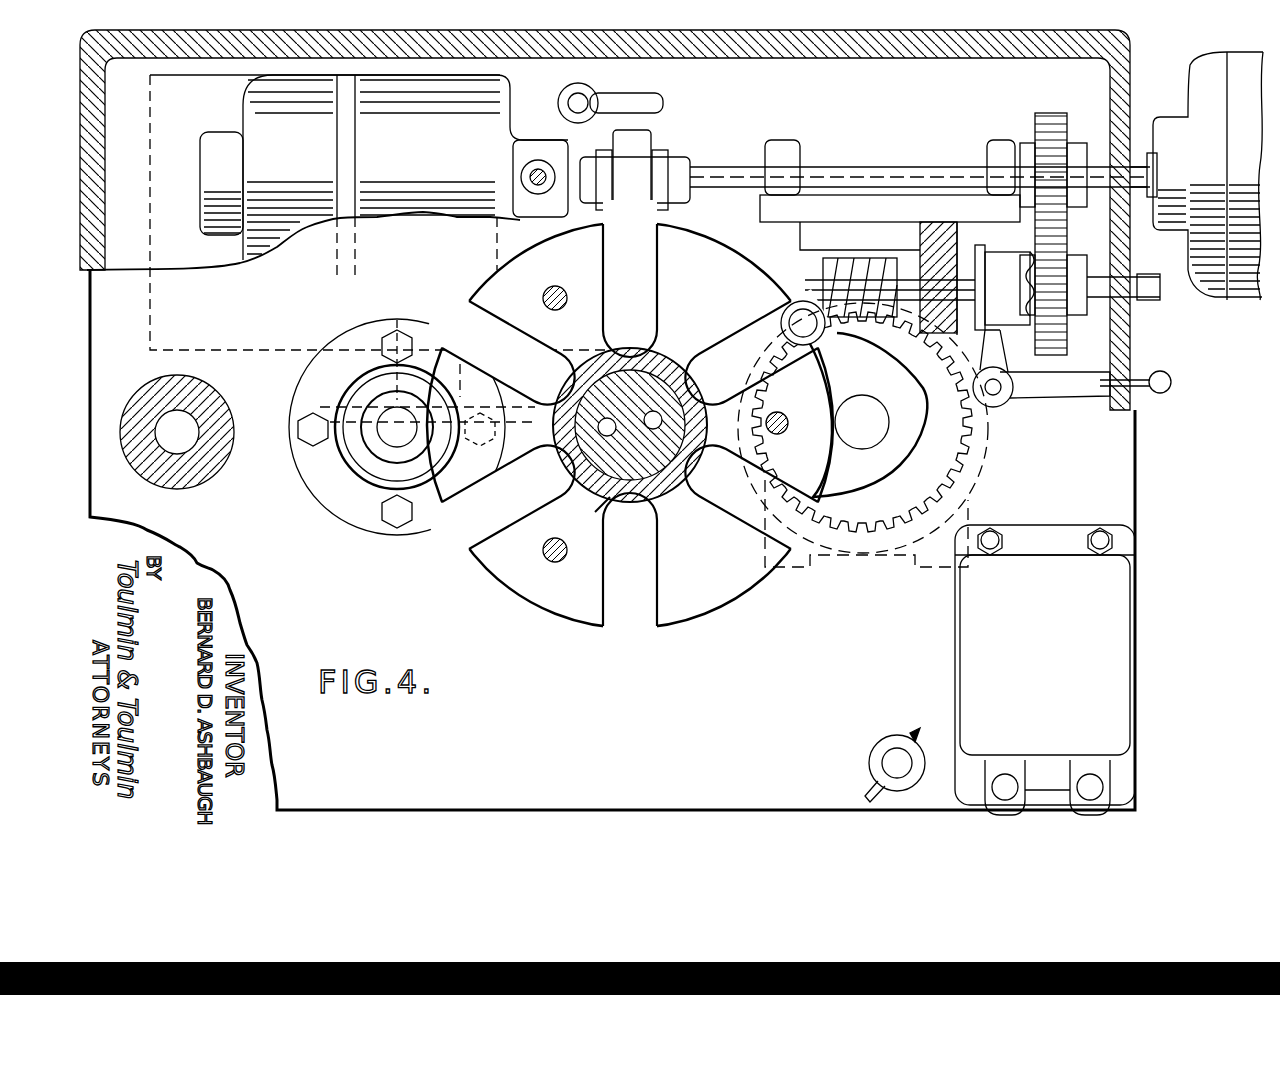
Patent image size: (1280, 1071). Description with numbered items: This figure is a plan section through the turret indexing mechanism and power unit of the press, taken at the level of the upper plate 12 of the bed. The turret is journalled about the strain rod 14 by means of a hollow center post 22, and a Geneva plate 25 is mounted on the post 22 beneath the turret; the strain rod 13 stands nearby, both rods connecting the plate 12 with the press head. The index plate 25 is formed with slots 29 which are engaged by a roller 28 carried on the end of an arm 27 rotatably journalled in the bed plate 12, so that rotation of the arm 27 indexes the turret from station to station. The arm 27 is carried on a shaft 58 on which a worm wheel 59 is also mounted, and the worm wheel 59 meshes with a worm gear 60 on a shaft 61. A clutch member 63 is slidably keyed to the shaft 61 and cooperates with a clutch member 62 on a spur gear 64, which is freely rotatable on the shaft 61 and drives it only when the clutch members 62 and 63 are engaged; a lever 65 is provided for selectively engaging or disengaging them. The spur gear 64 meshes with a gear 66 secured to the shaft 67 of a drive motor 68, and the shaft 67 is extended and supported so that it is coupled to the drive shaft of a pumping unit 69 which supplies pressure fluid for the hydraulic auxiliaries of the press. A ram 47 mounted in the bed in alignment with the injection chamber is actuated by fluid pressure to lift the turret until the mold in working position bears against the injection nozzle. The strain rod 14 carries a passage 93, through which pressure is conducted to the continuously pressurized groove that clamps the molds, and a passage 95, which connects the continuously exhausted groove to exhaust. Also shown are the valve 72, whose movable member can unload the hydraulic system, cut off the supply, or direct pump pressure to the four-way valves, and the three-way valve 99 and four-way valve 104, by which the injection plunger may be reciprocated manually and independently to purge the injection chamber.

The upper plate 12 is at (454, 760).
The strain rod 13 is at (200, 470).
The strain rod 14 is at (652, 392).
The hollow center post 22 is at (610, 505).
The Geneva plate 25 is at (683, 600).
The arm 27 is at (907, 390).
The roller 28 is at (782, 316).
The slots 29 is at (657, 310).
The ram 47 is at (393, 440).
The shaft 58 is at (883, 443).
The worm wheel 59 is at (972, 496).
The worm gear 60 is at (862, 258).
The shaft 61 is at (935, 222).
The clutch member 62 is at (1000, 262).
The clutch member 63 is at (1055, 360).
The spur gear 64 is at (1125, 326).
The lever 65 is at (1172, 388).
The gear 66 is at (1050, 114).
The shaft 67 is at (1135, 178).
The drive motor 68 is at (1213, 62).
The pumping unit 69 is at (442, 155).
The valve 72 is at (1005, 770).
The passage 93 is at (659, 432).
The passage 95 is at (602, 440).
The three-way valve 99 is at (882, 763).
The four-way valve 104 is at (1092, 770).